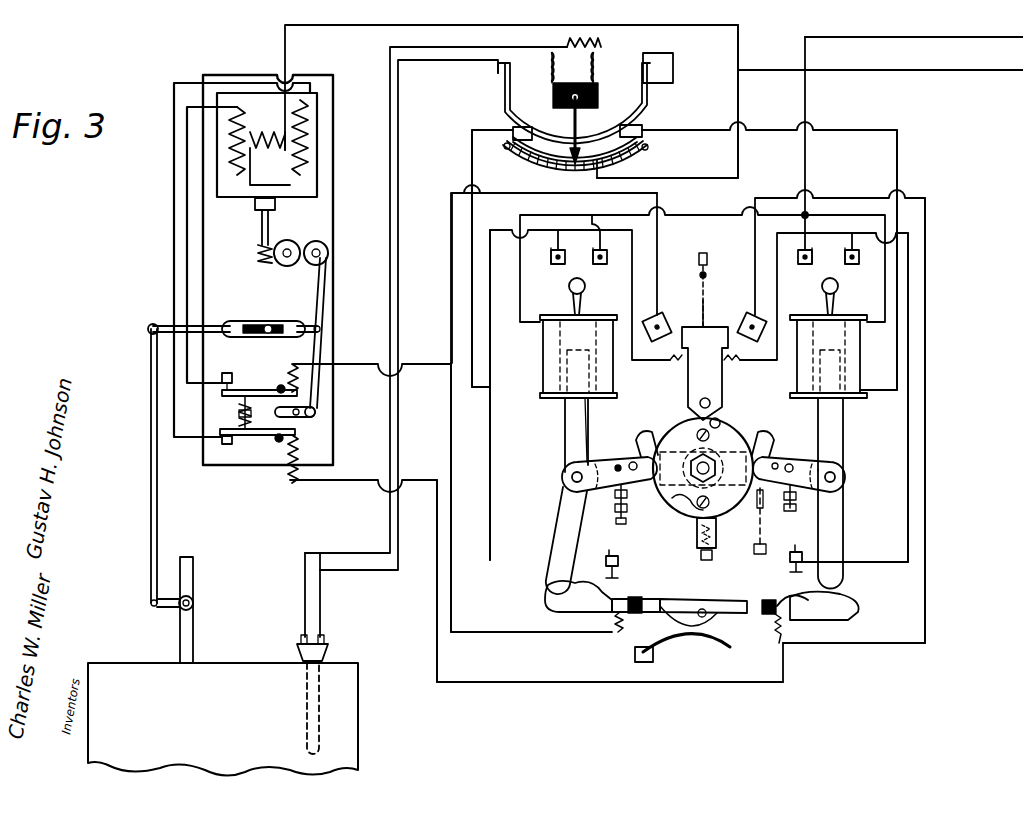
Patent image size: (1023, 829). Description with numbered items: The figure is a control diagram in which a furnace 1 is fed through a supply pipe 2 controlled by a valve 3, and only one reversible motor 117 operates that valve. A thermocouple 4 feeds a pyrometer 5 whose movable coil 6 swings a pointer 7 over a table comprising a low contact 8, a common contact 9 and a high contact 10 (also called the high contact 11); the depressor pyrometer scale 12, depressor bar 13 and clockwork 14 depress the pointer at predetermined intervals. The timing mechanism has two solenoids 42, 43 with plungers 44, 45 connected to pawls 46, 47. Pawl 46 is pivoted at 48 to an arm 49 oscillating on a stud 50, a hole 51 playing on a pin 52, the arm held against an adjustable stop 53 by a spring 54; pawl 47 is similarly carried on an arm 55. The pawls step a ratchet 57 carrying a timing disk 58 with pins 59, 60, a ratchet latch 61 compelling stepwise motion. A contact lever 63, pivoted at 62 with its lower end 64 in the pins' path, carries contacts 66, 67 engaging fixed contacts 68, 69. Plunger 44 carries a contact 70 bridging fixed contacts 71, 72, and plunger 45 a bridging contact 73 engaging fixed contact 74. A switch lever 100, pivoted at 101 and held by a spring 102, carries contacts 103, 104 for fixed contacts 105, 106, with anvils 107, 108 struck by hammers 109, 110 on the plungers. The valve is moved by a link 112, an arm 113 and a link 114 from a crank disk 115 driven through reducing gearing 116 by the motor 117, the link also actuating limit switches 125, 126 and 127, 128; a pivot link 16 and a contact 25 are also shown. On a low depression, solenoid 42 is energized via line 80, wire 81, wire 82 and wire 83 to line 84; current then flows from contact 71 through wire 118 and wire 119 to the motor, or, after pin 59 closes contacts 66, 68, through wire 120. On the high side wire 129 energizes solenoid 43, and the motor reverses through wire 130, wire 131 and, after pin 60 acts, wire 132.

The furnace 1 is at (223, 719).
The supply pipe 2 is at (195, 569).
The valve 3 is at (194, 605).
The thermocouple 4 is at (305, 706).
The pyrometer 5 is at (576, 61).
The movable coil 6 is at (592, 96).
The pointer 7 is at (580, 130).
The low contact 8 is at (538, 127).
The common contact 9 is at (519, 157).
The high contact 10 is at (638, 128).
The high contact 11 is at (625, 160).
The depressor pyrometer scale 12 is at (650, 149).
The depressor bar 13 is at (504, 93).
The clockwork 14 is at (658, 68).
The pivot link 16 is at (302, 416).
The contact 25 is at (856, 261).
The solenoid 42 is at (541, 357).
The solenoid 43 is at (860, 359).
The plunger 44 is at (564, 414).
The plunger 45 is at (838, 414).
The pawl 46 is at (571, 476).
The pawl 47 is at (838, 477).
The pivot 48 is at (636, 448).
The arm 49 is at (610, 455).
The stud 50 is at (703, 460).
The hole 51 is at (617, 472).
The pin 52 is at (790, 463).
The adjustable stop 53 is at (619, 511).
The spring 54 is at (763, 527).
The arm 55 is at (782, 498).
The ratchet 57 is at (703, 468).
The timing disk 58 is at (664, 428).
The pin 59 is at (676, 505).
The pin 60 is at (720, 420).
The ratchet latch 61 is at (719, 539).
The pivot 62 is at (710, 400).
The contact lever 63 is at (705, 373).
The lower end 64 is at (692, 414).
The contact 66 is at (690, 322).
The contact 67 is at (718, 322).
The fixed contact 68 is at (668, 312).
The fixed contact 69 is at (746, 318).
The contact 70 is at (569, 287).
The fixed contact 71 is at (552, 263).
The fixed contact 72 is at (600, 264).
The bridging contact 73 is at (838, 287).
The fixed contact 74 is at (800, 264).
The line 80 is at (880, 60).
The wire 81 is at (667, 101).
The wire 82 is at (474, 213).
The wire 83 is at (806, 103).
The line 84 is at (822, 37).
The switch lever 100 is at (680, 608).
The pivot 101 is at (698, 617).
The spring 102 is at (690, 645).
The contact 103 is at (636, 597).
The contact 104 is at (776, 596).
The fixed contact 105 is at (606, 562).
The fixed contact 106 is at (789, 568).
The anvil 107 is at (578, 596).
The anvil 108 is at (824, 606).
The hammer 109 is at (556, 515).
The hammer 110 is at (830, 527).
The link 112 is at (150, 476).
The arm 113 is at (230, 321).
The link 114 is at (316, 300).
The crank disk 115 is at (328, 246).
The reducing gearing 116 is at (281, 232).
The reversible motor 117 is at (267, 145).
The wire 118 is at (491, 441).
The wire 119 is at (450, 418).
The wire 120 is at (452, 284).
The limit switch contact 125 is at (250, 389).
The limit switch contact 126 is at (228, 372).
The limit switch contact 127 is at (248, 436).
The limit switch contact 128 is at (225, 448).
The wire 129 is at (898, 148).
The wire 130 is at (910, 437).
The wire 131 is at (610, 581).
The wire 132 is at (926, 497).